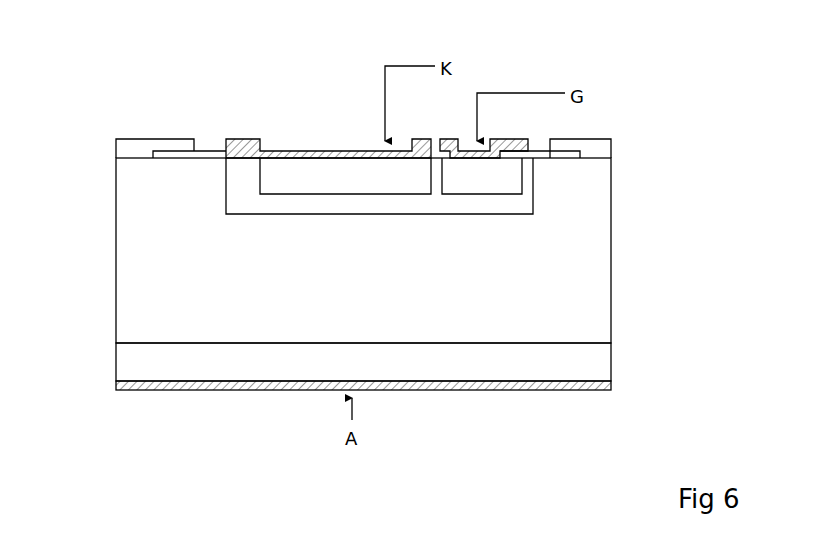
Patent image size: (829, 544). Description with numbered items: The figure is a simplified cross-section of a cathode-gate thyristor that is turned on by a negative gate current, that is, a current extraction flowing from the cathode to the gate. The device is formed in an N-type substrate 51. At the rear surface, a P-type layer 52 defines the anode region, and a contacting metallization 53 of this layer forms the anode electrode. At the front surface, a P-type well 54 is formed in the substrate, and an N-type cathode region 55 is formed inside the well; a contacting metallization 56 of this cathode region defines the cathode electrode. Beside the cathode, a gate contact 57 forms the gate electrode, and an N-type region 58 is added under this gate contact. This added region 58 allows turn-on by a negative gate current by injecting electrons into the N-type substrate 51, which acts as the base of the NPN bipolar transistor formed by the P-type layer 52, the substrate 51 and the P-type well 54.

The N-type substrate 51 is at (591, 280).
The P-type layer 52 is at (588, 362).
The contacting metallization 53 is at (186, 385).
The P-type well 54 is at (238, 202).
The N-type cathode region 55 is at (290, 173).
The contacting metallization 56 is at (345, 151).
The gate contact 57 is at (502, 139).
The N-type region 58 is at (522, 186).